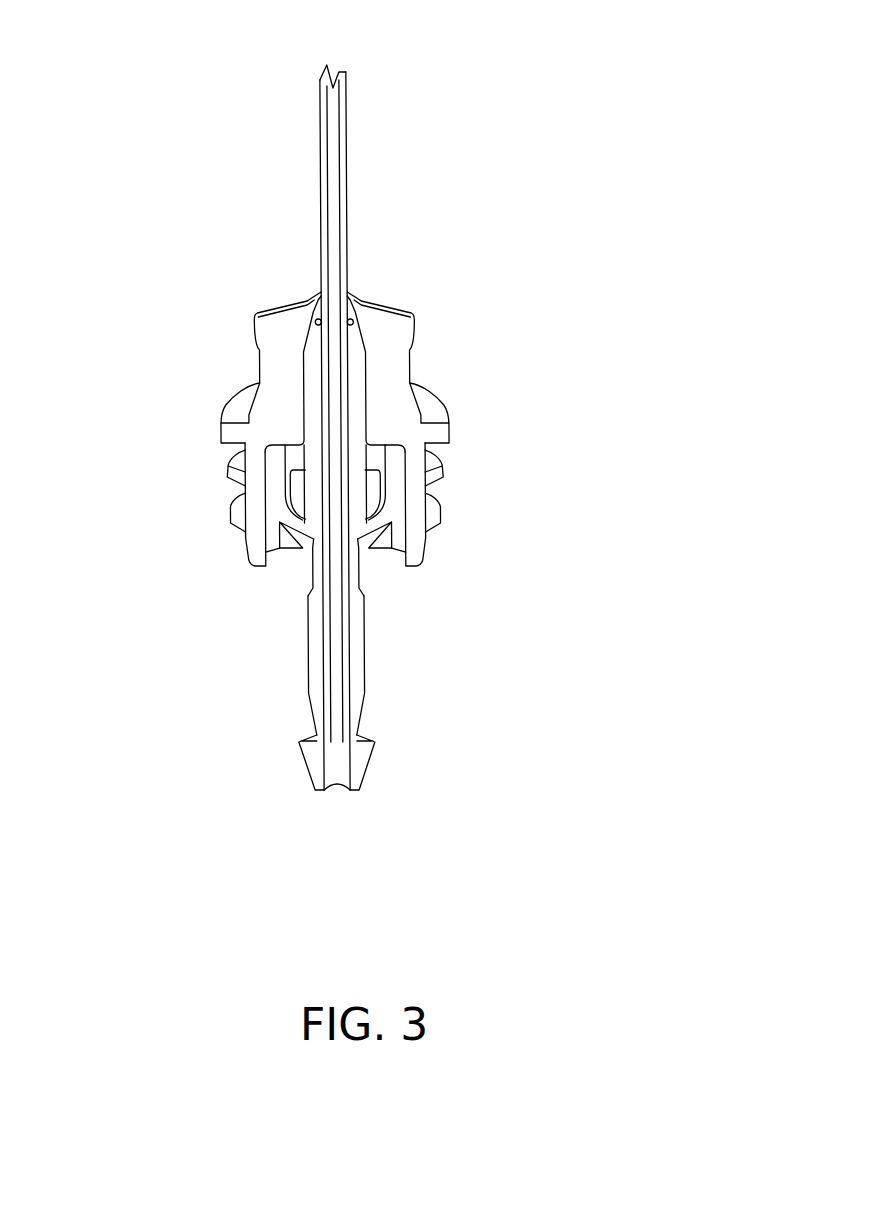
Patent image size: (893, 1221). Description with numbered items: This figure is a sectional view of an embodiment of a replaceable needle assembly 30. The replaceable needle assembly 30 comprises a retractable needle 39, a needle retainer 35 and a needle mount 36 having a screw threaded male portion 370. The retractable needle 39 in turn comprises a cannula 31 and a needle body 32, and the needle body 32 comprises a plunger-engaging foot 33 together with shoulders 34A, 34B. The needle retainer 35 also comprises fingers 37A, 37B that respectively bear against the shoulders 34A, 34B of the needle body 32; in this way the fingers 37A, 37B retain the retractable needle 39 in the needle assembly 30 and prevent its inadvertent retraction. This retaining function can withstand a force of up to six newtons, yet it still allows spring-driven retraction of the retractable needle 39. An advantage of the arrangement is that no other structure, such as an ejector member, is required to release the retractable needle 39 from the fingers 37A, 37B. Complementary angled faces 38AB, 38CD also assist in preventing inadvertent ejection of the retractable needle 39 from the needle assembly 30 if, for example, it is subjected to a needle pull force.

The replaceable needle assembly 30 is at (167, 333).
The cannula 31 is at (347, 162).
The needle body 32 is at (370, 646).
The plunger-engaging foot 33 is at (313, 758).
The shoulder 34A is at (312, 522).
The shoulder 34B is at (354, 523).
The needle retainer 35 is at (395, 488).
The needle mount 36 is at (440, 368).
The finger 37A is at (307, 543).
The finger 37B is at (359, 543).
The complementary angled faces 38AB is at (305, 342).
The complementary angled faces 38CD is at (361, 342).
The retractable needle 39 is at (265, 630).
The screw threaded male portion 370 is at (226, 479).